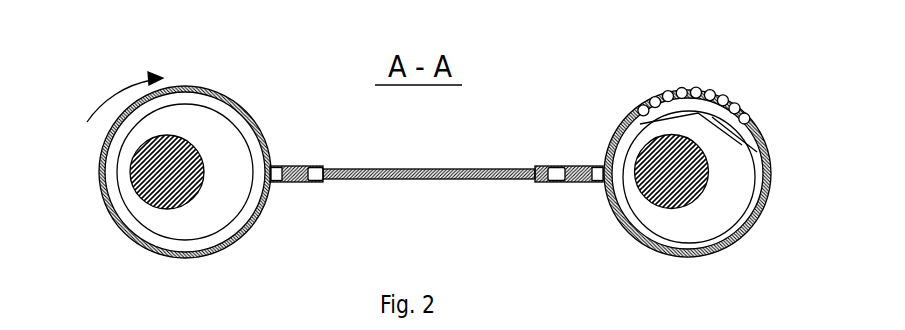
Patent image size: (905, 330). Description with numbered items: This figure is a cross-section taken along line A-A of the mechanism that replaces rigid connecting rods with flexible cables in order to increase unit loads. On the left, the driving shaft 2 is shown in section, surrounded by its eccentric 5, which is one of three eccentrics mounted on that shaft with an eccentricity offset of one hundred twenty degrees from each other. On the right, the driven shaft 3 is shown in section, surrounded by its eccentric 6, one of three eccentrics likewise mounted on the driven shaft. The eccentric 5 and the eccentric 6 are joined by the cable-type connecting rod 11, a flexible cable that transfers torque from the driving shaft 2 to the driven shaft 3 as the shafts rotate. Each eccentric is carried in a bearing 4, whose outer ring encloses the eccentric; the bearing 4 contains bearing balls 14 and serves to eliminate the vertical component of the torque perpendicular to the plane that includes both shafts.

The driving shaft 2 is at (147, 162).
The driven shaft 3 is at (688, 147).
The bearing 4 is at (103, 183).
The eccentric of the driving shaft 5 is at (157, 226).
The eccentric of the driven shaft 6 is at (722, 209).
The cable-type connecting rod 11 is at (350, 173).
The bearing balls 14 is at (717, 100).